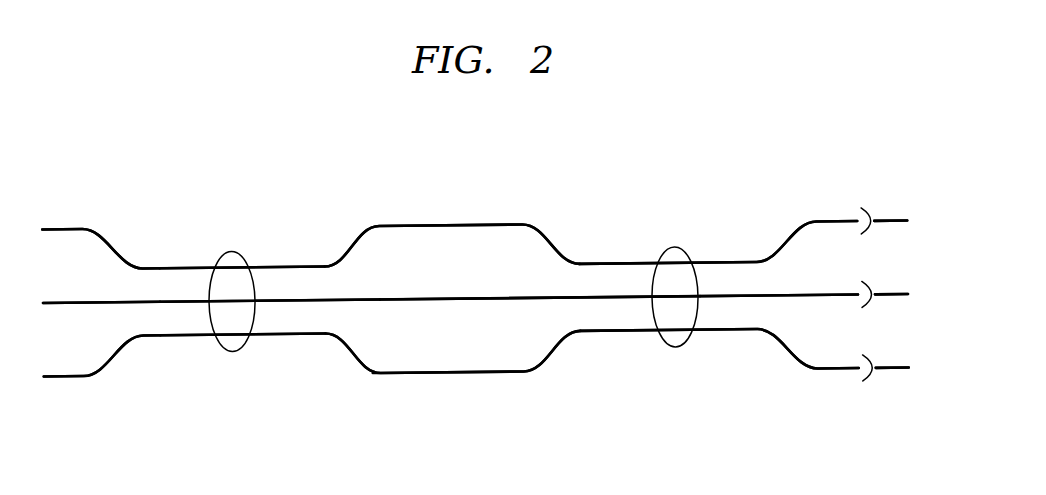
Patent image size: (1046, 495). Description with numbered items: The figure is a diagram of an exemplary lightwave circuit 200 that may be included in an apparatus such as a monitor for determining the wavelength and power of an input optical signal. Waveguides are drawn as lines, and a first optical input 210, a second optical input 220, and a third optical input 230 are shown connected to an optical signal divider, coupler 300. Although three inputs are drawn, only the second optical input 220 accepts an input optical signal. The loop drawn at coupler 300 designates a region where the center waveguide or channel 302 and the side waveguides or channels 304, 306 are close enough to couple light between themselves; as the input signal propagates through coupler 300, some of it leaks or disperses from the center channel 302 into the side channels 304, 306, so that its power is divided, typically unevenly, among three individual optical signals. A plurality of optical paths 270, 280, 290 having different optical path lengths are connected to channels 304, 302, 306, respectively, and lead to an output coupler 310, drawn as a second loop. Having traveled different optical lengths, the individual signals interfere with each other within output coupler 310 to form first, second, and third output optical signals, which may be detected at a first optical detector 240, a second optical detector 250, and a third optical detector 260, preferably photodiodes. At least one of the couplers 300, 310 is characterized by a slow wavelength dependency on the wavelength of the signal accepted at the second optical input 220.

The lightwave circuit 200 is at (410, 168).
The first optical input 210 is at (115, 243).
The second optical input 220 is at (80, 301).
The third optical input 230 is at (67, 377).
The first optical detector 240 is at (872, 212).
The second optical detector 250 is at (872, 285).
The third optical detector 260 is at (872, 358).
The optical path 270 is at (485, 225).
The optical path 280 is at (485, 298).
The optical path 290 is at (485, 373).
The coupler 300 is at (233, 250).
The center waveguide or channel 302 is at (330, 299).
The side waveguide or channel 304 is at (295, 263).
The side waveguide or channel 306 is at (297, 337).
The output coupler 310 is at (675, 247).